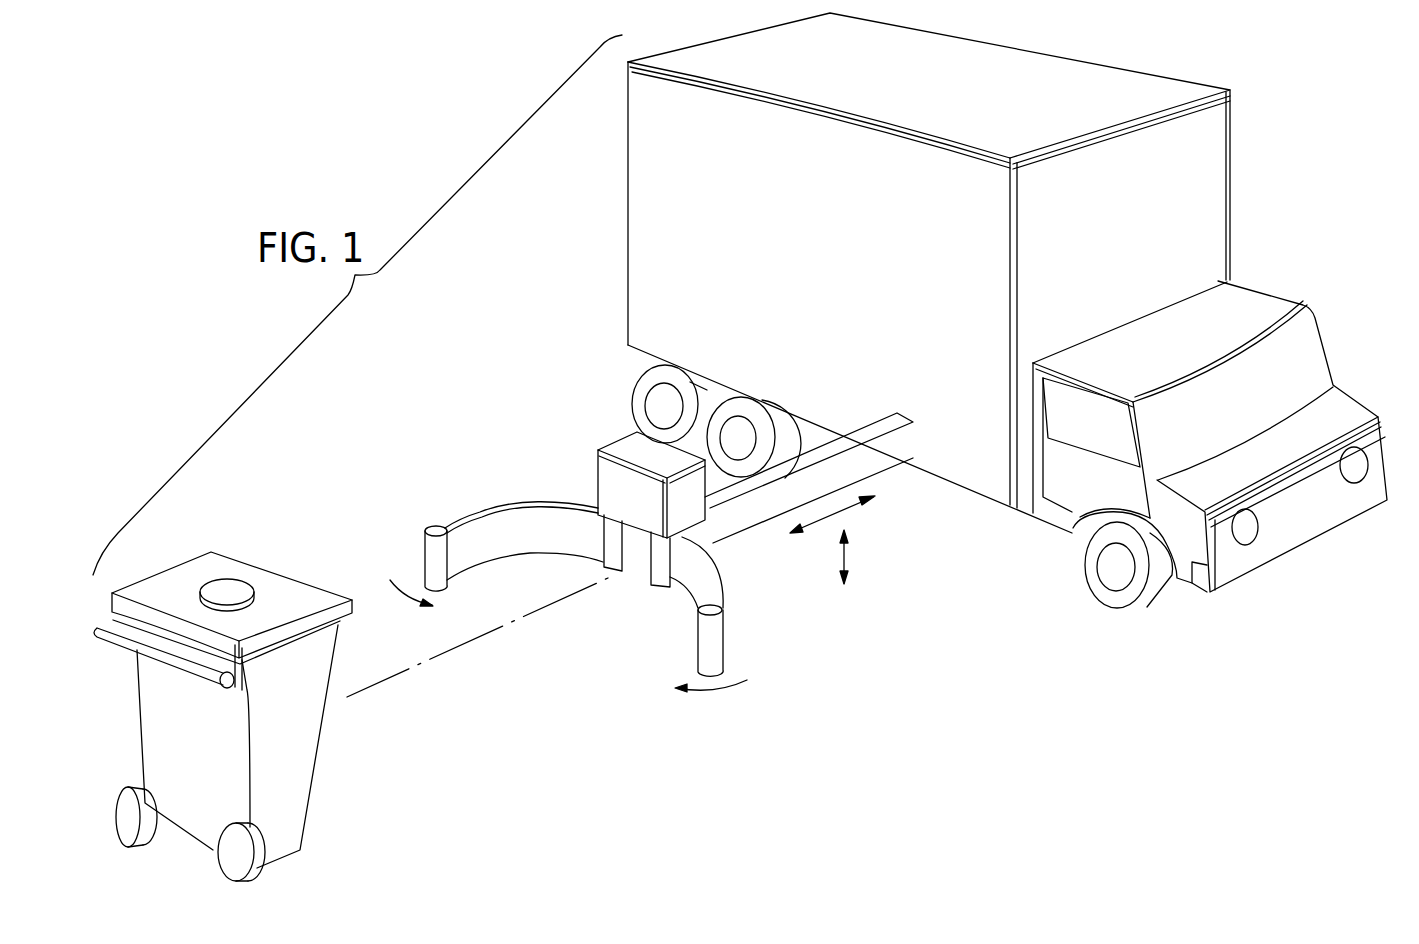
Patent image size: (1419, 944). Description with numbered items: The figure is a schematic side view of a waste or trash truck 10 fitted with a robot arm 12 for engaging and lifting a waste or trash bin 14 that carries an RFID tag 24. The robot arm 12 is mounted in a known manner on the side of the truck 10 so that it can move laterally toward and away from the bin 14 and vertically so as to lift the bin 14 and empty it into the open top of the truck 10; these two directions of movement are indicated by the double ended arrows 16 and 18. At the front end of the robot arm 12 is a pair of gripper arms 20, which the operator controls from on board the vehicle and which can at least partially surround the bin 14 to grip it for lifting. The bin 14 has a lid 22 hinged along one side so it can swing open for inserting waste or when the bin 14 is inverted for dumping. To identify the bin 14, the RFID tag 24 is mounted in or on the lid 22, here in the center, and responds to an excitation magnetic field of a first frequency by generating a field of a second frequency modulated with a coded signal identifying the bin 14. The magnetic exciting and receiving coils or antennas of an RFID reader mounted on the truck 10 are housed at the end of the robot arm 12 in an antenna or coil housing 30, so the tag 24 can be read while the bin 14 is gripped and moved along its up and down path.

The waste truck 10 is at (628, 203).
The robot arm 12 is at (755, 512).
The waste bin 14 is at (313, 735).
The double ended arrow 16 is at (847, 510).
The double ended arrow 18 is at (850, 558).
The gripper arms 20 is at (477, 547).
The lid 22 is at (298, 583).
The RFID tag 24 is at (247, 573).
The antenna housing 30 is at (577, 455).